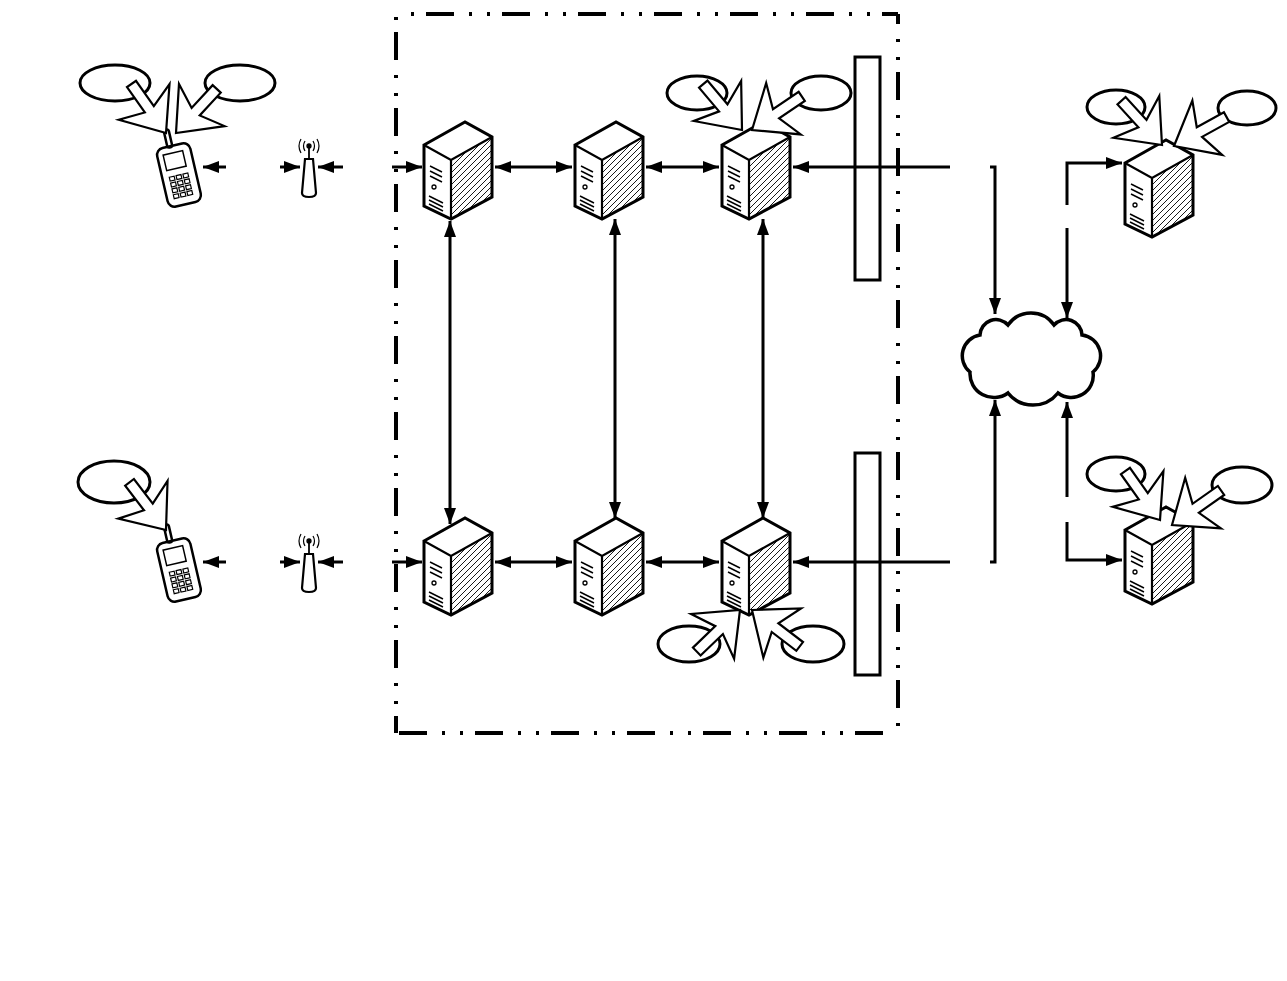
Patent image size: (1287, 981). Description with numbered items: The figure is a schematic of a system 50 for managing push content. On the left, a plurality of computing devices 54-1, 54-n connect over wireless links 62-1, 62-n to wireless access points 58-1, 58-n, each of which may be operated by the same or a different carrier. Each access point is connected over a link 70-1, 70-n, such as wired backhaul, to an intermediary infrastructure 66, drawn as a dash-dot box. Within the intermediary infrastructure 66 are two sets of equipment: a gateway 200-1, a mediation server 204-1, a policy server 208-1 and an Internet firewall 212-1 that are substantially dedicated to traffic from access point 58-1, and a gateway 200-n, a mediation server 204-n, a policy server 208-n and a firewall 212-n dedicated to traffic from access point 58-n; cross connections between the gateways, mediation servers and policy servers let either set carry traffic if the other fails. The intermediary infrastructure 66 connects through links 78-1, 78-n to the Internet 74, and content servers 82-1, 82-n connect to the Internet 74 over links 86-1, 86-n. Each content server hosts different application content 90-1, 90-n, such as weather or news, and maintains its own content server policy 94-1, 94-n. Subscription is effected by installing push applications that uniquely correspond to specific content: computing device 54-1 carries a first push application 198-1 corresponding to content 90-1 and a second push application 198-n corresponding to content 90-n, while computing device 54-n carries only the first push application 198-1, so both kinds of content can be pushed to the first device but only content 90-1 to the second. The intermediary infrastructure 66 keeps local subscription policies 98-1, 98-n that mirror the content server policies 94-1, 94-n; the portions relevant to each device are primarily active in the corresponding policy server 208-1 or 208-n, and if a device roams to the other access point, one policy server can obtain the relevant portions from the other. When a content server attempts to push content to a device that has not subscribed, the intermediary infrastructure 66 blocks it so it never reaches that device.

The system 50 is at (240, 758).
The computing device 54-1 is at (172, 216).
The computing device 54-n is at (170, 612).
The wireless access point 58-1 is at (303, 203).
The wireless access point 58-n is at (298, 598).
The wireless link 62-1 is at (251, 167).
The wireless link 62-n is at (251, 562).
The intermediary infrastructure 66 is at (503, 748).
The link 70-1 is at (370, 167).
The link 70-n is at (370, 562).
The Internet 74 is at (1031, 359).
The link 78-1 is at (894, 235).
The link 78-n is at (894, 486).
The content server 82-1 is at (1162, 238).
The content server 82-n is at (1160, 607).
The link 86-1 is at (1084, 240).
The link 86-n is at (1084, 481).
The application content 90-1 is at (1136, 123).
The application content 90-n is at (1136, 495).
The content server policy 94-1 is at (1217, 131).
The content server policy 94-n is at (1213, 507).
The local subscription policy 98-1 is at (712, 369).
The local subscription policy 98-n is at (792, 371).
The push application 198-1 is at (134, 307).
The push application 198-n is at (214, 109).
The gateway 200-1 is at (494, 213).
The gateway 200-n is at (484, 520).
The mediation server 204-1 is at (646, 213).
The mediation server 204-n is at (648, 520).
The policy server 208-1 is at (788, 213).
The policy server 208-n is at (790, 520).
The Internet firewall 212-1 is at (851, 284).
The Internet firewall 212-n is at (848, 449).